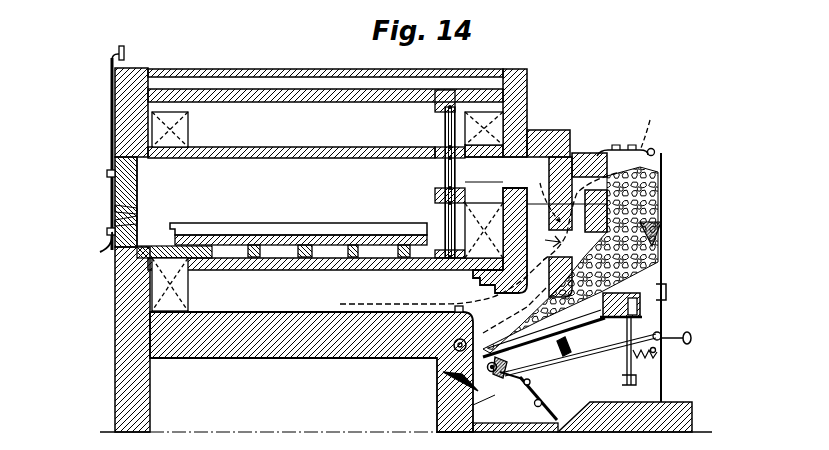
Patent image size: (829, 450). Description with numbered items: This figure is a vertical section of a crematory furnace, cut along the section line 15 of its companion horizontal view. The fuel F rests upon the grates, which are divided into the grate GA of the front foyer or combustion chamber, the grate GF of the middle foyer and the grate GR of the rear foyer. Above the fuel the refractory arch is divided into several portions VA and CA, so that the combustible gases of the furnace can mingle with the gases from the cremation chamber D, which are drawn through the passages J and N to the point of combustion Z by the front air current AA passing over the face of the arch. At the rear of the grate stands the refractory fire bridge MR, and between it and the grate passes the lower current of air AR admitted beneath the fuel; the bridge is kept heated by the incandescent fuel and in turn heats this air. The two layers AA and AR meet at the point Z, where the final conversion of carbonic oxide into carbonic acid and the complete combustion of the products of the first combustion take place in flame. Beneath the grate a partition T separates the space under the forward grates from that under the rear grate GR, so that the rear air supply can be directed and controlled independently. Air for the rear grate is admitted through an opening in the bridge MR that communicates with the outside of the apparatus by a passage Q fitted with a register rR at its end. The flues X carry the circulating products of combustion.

The section line 15- 15 is at (465, 181).
The flues X is at (327, 211).
The cremation chamber D is at (298, 230).
The passage J is at (489, 167).
The arch VA is at (542, 198).
The passage N is at (536, 223).
The air current AA is at (511, 238).
The arch portion CA is at (520, 234).
The front grate GA is at (655, 236).
The passage Q is at (443, 372).
The register rR is at (668, 292).
The air current AR is at (357, 296).
The point of combustion Z is at (445, 303).
The fuel F is at (562, 325).
The middle grate GF is at (573, 347).
The rear grate GR is at (492, 373).
The fire bridge MR is at (487, 404).
The partition T is at (528, 396).